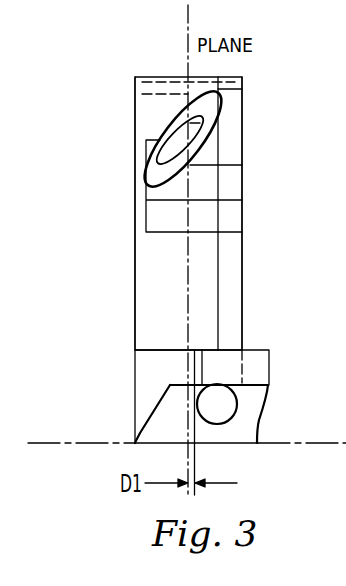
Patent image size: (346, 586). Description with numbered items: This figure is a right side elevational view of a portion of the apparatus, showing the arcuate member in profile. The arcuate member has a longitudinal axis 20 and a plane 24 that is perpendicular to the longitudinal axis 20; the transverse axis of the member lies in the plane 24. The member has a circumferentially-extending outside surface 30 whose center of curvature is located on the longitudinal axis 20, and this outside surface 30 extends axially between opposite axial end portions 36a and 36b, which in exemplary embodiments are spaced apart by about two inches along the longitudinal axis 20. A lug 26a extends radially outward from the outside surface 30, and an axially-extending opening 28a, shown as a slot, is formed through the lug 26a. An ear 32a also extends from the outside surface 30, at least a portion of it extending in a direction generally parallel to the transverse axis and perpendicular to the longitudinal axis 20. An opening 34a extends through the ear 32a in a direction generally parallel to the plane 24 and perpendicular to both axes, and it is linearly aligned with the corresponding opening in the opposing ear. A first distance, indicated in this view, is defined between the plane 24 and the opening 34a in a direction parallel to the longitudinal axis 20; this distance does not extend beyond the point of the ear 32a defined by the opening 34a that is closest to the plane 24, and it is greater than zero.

The longitudinal axis 20 is at (54, 442).
The plane 24 is at (187, 53).
The lug 26a is at (232, 117).
The axially-extending opening 28a is at (163, 143).
The circumferentially-extending outside surface 30 is at (158, 77).
The ear 32a is at (270, 362).
The opening 34a is at (212, 410).
The axial end portion 36a is at (135, 262).
The axial end portion 36b is at (242, 268).